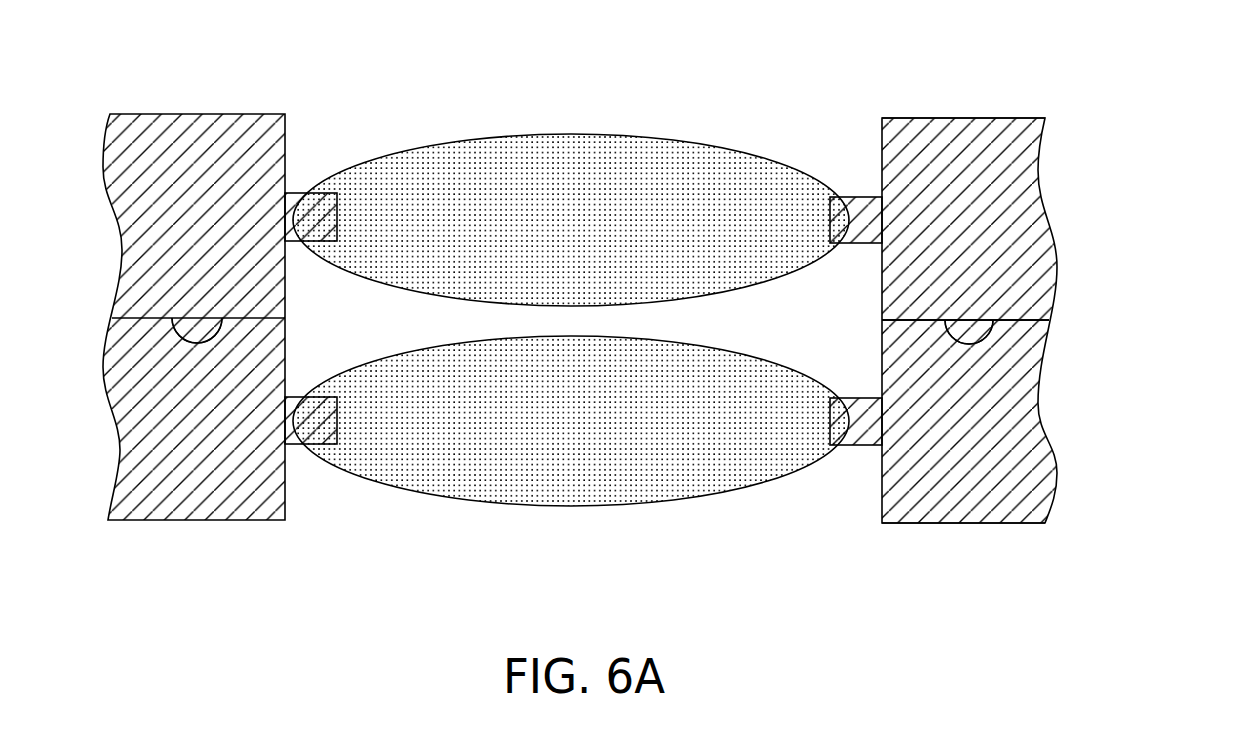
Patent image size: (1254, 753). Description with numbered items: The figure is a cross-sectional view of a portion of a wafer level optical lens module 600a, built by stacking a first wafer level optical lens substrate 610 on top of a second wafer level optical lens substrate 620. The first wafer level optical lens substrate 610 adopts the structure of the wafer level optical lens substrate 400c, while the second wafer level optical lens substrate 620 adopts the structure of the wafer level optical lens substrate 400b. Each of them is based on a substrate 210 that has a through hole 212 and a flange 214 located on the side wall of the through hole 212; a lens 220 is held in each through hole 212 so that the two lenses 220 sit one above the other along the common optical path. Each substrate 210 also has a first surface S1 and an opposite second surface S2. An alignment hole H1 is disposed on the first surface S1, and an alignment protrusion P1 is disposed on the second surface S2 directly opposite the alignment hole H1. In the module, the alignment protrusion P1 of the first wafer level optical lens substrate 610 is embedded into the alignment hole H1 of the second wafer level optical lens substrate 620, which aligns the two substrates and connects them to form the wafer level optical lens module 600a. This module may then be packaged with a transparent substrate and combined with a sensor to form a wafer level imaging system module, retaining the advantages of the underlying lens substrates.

The through hole 212 is at (571, 257).
The lens 220 is at (673, 168).
The flange 214 is at (862, 208).
The substrate 210 is at (668, 320).
The first wafer level optical lens substrate 610 is at (1057, 320).
The wafer level optical lens substrate 400c is at (1078, 225).
The second wafer level optical lens substrate 620 is at (1151, 435).
The wafer level optical lens substrate 400b is at (1070, 452).
The first surface S1 is at (985, 115).
The second surface S2 is at (926, 326).
The alignment protrusion P1 is at (216, 319).
The alignment hole H1 is at (197, 322).
The wafer level optical lens module 600a is at (636, 337).